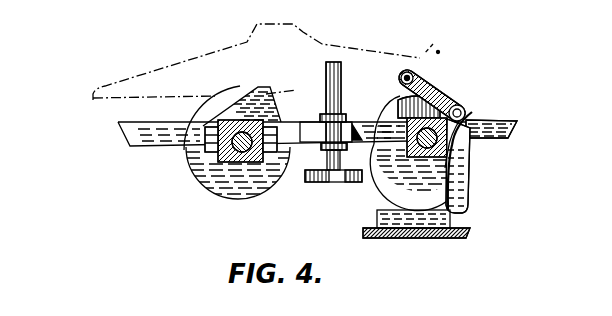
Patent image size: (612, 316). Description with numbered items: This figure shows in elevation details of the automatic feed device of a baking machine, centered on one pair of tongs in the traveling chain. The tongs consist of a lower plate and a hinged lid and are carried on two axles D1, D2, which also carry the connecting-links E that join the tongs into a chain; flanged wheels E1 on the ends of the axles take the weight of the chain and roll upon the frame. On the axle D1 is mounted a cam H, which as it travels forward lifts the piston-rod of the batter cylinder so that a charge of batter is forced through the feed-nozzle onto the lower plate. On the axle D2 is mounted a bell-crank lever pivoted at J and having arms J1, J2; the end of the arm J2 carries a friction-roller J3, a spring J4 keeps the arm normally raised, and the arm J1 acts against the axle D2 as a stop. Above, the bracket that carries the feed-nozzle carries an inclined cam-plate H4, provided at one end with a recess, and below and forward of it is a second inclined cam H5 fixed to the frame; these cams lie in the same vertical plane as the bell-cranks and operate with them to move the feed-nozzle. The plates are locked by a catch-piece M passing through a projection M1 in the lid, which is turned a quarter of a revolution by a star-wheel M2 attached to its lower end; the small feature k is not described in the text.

The inclined cam-plate H4 is at (253, 60).
The cam H is at (240, 115).
The second inclined cam H5 is at (407, 216).
The links E is at (366, 5).
The flanged wheels E1 is at (300, 215).
The axle D1 is at (222, 150).
The axle D2 is at (470, 160).
The catch-piece M is at (338, 62).
The projection M1 is at (320, 132).
The star-wheel M2 is at (332, 178).
The pivot J is at (482, 112).
The arm J1 is at (453, 180).
The arm J2 is at (443, 93).
The friction-roller J3 is at (420, 70).
The spring J4 is at (404, 82).
The pin k is at (436, 39).